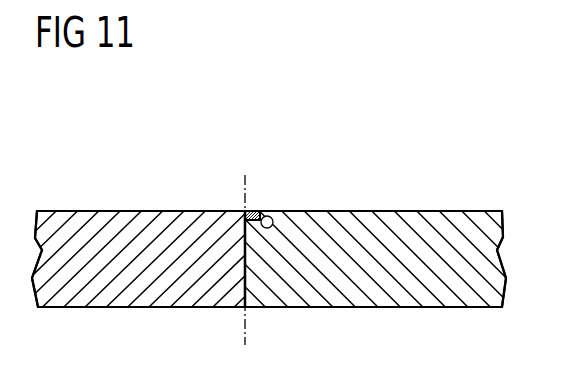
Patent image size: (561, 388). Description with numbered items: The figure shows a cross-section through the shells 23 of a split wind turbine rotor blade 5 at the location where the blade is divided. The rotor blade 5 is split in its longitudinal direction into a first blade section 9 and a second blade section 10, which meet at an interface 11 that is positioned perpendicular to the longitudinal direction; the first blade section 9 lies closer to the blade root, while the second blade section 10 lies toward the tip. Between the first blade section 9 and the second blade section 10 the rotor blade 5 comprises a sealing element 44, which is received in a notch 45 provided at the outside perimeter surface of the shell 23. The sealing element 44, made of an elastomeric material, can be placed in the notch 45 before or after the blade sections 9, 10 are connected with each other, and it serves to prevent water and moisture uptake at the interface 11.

The rotor blade 5 is at (153, 118).
The first blade section 9 is at (109, 194).
The second blade section 10 is at (392, 195).
The interface 11 is at (254, 293).
The shell 23 is at (119, 299).
The sealing element 44 is at (252, 209).
The notch 45 is at (269, 216).